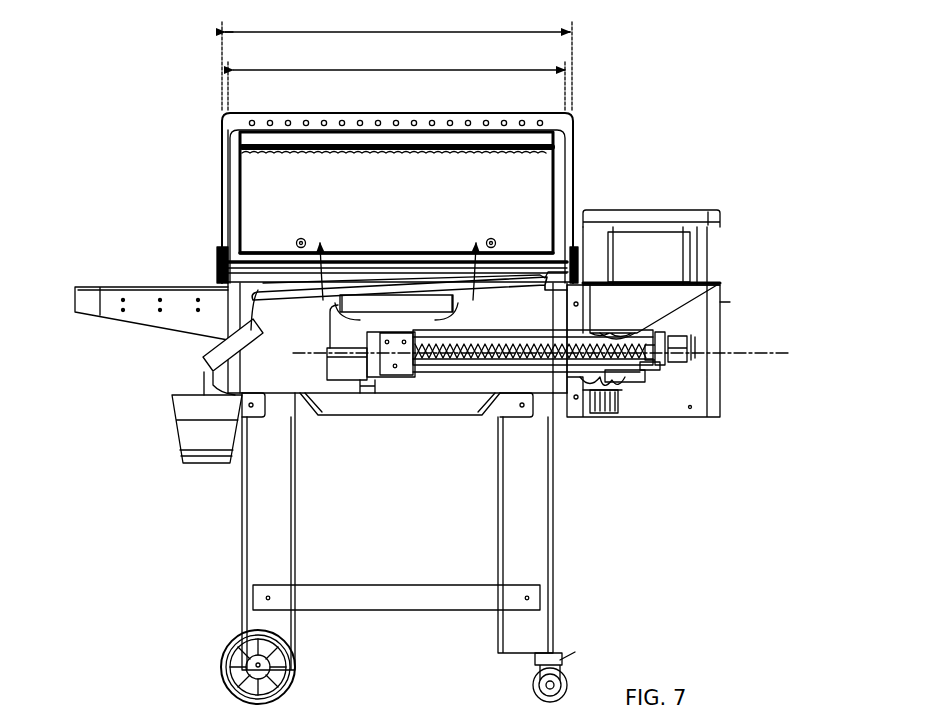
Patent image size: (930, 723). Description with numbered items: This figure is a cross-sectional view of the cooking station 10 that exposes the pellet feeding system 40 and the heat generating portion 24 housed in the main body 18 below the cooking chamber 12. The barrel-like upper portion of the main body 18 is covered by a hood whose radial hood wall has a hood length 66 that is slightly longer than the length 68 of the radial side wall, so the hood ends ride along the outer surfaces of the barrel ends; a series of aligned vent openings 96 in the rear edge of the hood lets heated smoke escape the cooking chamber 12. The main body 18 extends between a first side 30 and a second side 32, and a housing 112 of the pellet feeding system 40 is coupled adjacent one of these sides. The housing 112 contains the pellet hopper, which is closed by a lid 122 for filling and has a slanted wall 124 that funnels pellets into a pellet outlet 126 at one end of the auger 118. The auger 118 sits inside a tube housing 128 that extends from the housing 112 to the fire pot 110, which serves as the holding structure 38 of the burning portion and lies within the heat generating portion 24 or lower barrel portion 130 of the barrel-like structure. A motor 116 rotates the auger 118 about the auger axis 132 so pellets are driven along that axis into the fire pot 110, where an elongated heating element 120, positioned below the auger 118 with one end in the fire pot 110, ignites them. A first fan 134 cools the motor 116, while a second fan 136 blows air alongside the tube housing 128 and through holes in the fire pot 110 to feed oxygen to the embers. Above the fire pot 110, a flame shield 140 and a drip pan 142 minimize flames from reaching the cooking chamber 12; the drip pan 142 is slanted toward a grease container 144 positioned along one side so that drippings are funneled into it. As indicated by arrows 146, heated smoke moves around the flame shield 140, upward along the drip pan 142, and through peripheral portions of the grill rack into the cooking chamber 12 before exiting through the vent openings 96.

The cooking station 10 is at (657, 128).
The cooking chamber 12 is at (245, 215).
The main body 18 is at (555, 560).
The heat generating portion 24 is at (443, 397).
The first side 30 is at (722, 496).
The second side 32 is at (115, 487).
The holding structure 38 is at (362, 338).
The pellet feeding system 40 is at (612, 443).
The hood length 66 is at (420, 32).
The length of the radial side wall 68 is at (375, 70).
The vent openings 96 is at (418, 113).
The fire pot 110 is at (367, 362).
The housing 112 is at (720, 393).
The motor 116 is at (670, 366).
The auger 118 is at (517, 372).
The heating element 120 is at (390, 378).
The lid 122 is at (666, 212).
The slanted wall 124 is at (700, 290).
The pellet outlet 126 is at (615, 333).
The tube housing 128 is at (487, 340).
The lower barrel portion 130 is at (205, 374).
The auger axis 132 is at (752, 353).
The first fan 134 is at (692, 338).
The second fan 136 is at (627, 386).
The flame shield 140 is at (394, 300).
The drip pan 142 is at (267, 303).
The grease container 144 is at (178, 440).
The arrows 146 is at (322, 240).